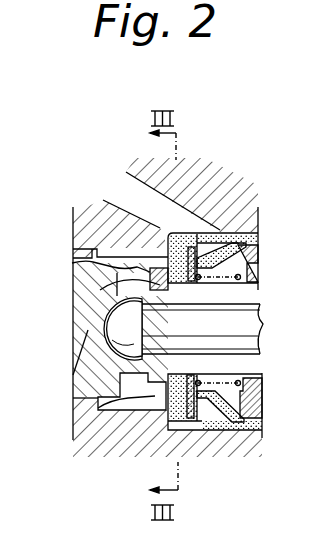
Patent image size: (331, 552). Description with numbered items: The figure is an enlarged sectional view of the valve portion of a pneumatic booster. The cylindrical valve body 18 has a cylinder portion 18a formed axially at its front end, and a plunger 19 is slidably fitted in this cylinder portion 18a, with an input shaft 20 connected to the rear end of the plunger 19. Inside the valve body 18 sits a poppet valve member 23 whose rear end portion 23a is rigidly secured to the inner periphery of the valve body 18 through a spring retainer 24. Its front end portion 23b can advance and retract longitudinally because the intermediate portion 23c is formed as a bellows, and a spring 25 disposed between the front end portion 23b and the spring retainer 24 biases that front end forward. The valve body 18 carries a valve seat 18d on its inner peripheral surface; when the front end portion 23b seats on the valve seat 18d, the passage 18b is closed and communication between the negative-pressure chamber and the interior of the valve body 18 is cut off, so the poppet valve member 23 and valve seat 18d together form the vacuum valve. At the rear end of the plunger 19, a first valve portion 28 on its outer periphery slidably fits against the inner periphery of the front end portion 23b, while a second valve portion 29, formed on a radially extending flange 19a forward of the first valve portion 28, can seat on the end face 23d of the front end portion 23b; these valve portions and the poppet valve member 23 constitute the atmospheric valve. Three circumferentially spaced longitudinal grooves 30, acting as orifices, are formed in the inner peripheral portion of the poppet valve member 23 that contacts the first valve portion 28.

The valve body 18 is at (240, 197).
The cylinder portion 18a is at (77, 240).
The passage 18b is at (172, 197).
The valve seat 18d is at (160, 228).
The plunger 19 is at (74, 337).
The flange 19a is at (160, 293).
The input shaft 20 is at (263, 328).
The poppet valve member 23 is at (207, 434).
The rear end portion 23a is at (260, 426).
The front end portion 23b is at (168, 450).
The intermediate portion 23c is at (228, 428).
The end face 23d is at (104, 446).
The spring retainer 24 is at (258, 402).
The spring 25 is at (240, 374).
The first valve portion 28 is at (97, 302).
The second valve portion 29 is at (97, 272).
The longitudinal grooves 30 is at (205, 292).